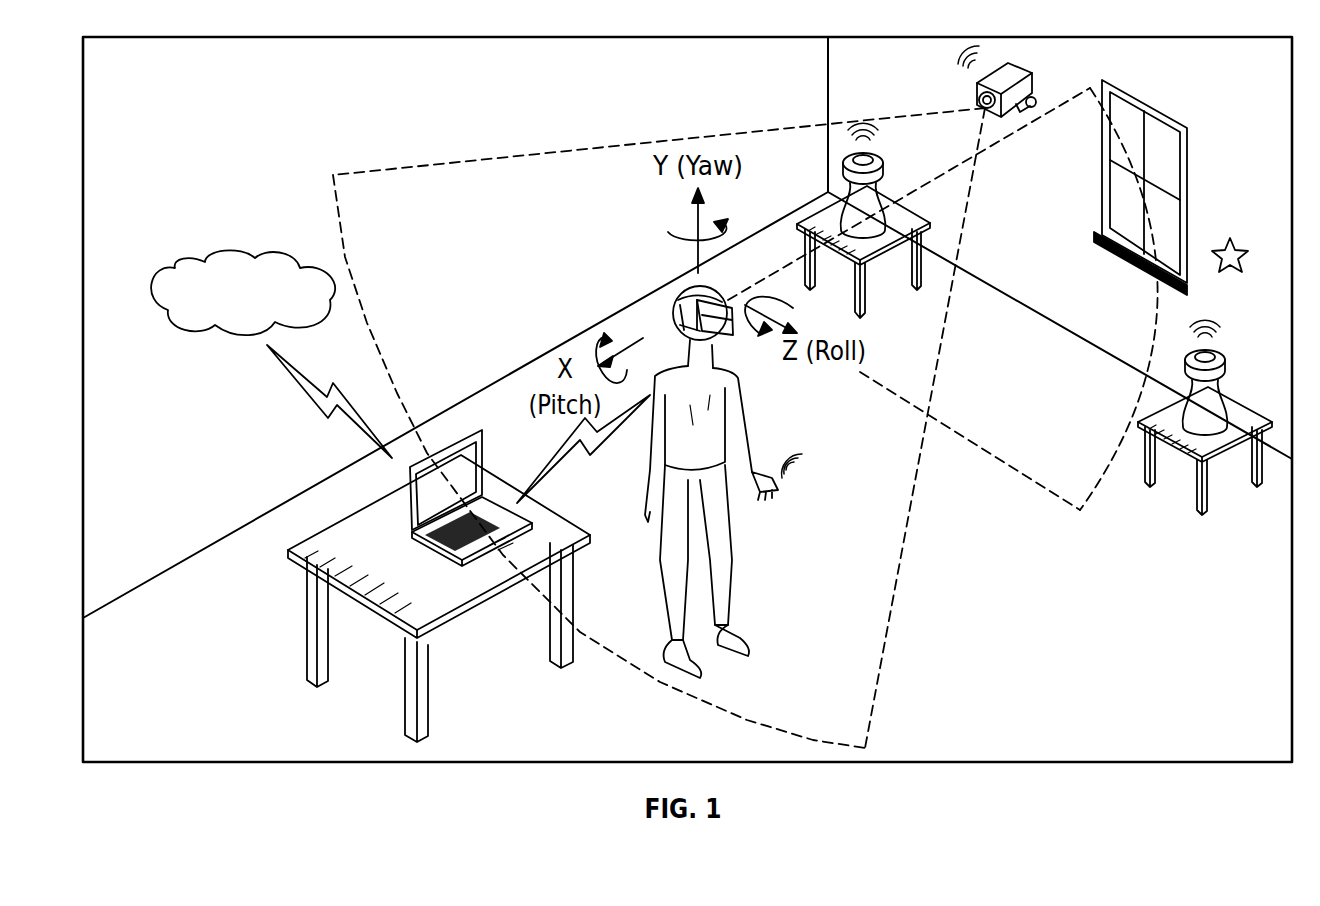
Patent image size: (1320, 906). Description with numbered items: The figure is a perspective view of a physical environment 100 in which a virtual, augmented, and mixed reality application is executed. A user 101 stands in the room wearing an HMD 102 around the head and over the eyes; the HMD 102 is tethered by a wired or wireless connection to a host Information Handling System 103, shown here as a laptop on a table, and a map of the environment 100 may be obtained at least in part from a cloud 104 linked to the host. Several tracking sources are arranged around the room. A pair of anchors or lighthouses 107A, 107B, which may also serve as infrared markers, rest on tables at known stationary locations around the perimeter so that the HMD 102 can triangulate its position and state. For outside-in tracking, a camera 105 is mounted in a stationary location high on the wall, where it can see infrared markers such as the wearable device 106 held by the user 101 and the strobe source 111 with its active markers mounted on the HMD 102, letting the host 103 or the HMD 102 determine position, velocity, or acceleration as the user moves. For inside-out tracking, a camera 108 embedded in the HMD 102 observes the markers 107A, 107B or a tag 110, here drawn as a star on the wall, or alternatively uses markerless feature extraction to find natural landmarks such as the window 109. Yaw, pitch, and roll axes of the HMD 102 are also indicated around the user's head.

The environment 100 is at (308, 37).
The user 101 is at (725, 545).
The HMD 102 is at (700, 292).
The host Information Handling System (IHS) 103 is at (410, 492).
The cloud 104 is at (172, 265).
The camera 105 is at (1033, 82).
The wearable device 106 is at (779, 486).
The lighthouse 107A is at (885, 172).
The lighthouse 107B is at (1225, 366).
The camera 108 is at (716, 298).
The window 109 is at (1190, 156).
The tag 110 is at (1238, 243).
The strobe source 111 is at (700, 330).